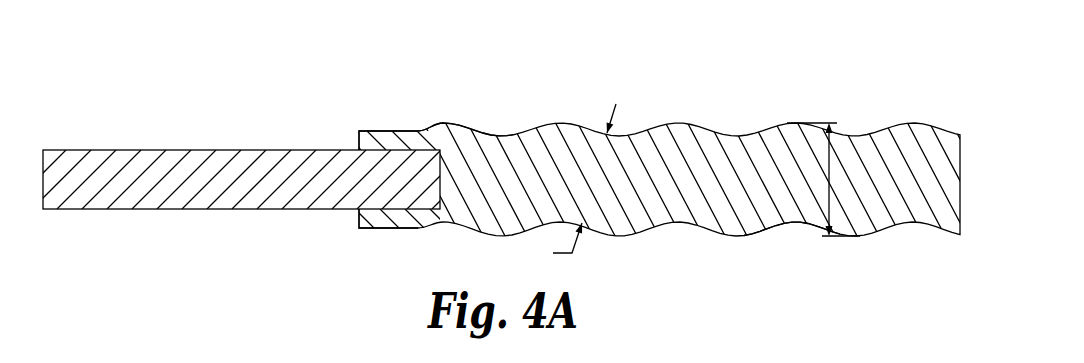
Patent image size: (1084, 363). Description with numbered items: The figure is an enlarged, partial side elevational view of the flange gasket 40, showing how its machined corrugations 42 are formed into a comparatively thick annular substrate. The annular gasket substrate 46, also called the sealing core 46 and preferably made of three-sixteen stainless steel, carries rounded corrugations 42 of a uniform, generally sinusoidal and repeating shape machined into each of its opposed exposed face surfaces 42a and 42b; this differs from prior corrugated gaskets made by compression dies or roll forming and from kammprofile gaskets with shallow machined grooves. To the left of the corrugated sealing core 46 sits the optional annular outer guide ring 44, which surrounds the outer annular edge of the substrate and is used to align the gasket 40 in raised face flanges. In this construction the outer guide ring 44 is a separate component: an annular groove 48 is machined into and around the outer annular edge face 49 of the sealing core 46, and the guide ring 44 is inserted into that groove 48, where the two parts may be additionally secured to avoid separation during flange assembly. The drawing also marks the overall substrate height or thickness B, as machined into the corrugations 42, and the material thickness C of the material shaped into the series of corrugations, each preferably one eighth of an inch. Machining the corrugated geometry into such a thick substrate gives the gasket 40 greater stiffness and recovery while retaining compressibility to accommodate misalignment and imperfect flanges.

The flange gasket 40 is at (508, 169).
The machined corrugations 42 is at (673, 178).
The exposed face surface 42a is at (442, 123).
The exposed face surface 42b is at (788, 223).
The outer guide ring 44 is at (178, 180).
The annular gasket substrate (sealing core) 46 is at (723, 183).
The annular groove 48 is at (380, 212).
The outer annular edge face 49 is at (335, 130).
The overall substrate height or thickness B is at (823, 179).
The material thickness C is at (558, 246).